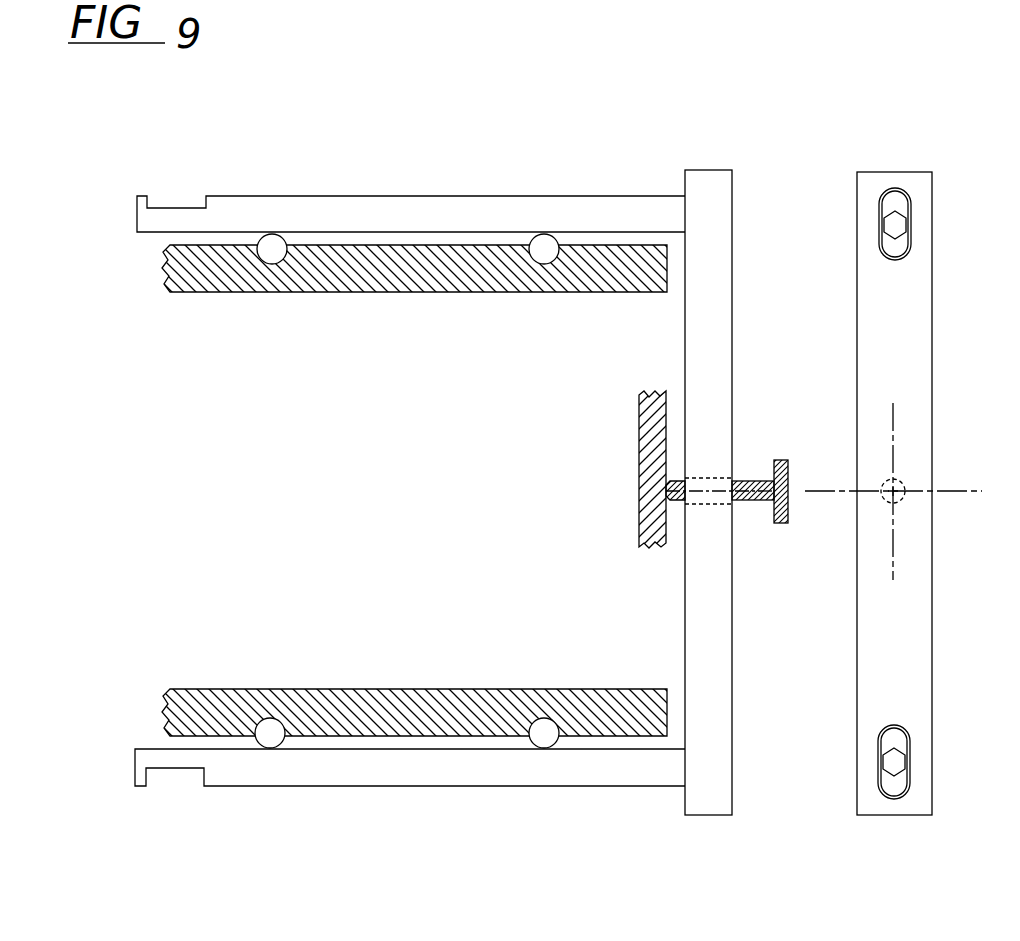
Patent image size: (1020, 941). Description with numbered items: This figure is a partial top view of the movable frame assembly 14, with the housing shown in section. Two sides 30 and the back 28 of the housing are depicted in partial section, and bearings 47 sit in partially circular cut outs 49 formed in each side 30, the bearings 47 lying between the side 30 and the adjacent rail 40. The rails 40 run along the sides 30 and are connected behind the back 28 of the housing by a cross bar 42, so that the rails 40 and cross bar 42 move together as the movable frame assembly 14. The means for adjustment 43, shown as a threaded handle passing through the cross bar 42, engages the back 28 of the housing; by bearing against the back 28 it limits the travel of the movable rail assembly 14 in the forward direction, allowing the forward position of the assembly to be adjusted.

The movable frame assembly 14 is at (410, 507).
The back 28 is at (638, 483).
The side 30 is at (392, 288).
The rail 40 is at (481, 209).
The cross bar 42 is at (715, 400).
The means for adjustment 43 is at (773, 513).
The bearing 47 is at (272, 244).
The partially circular cut out 49 is at (268, 728).